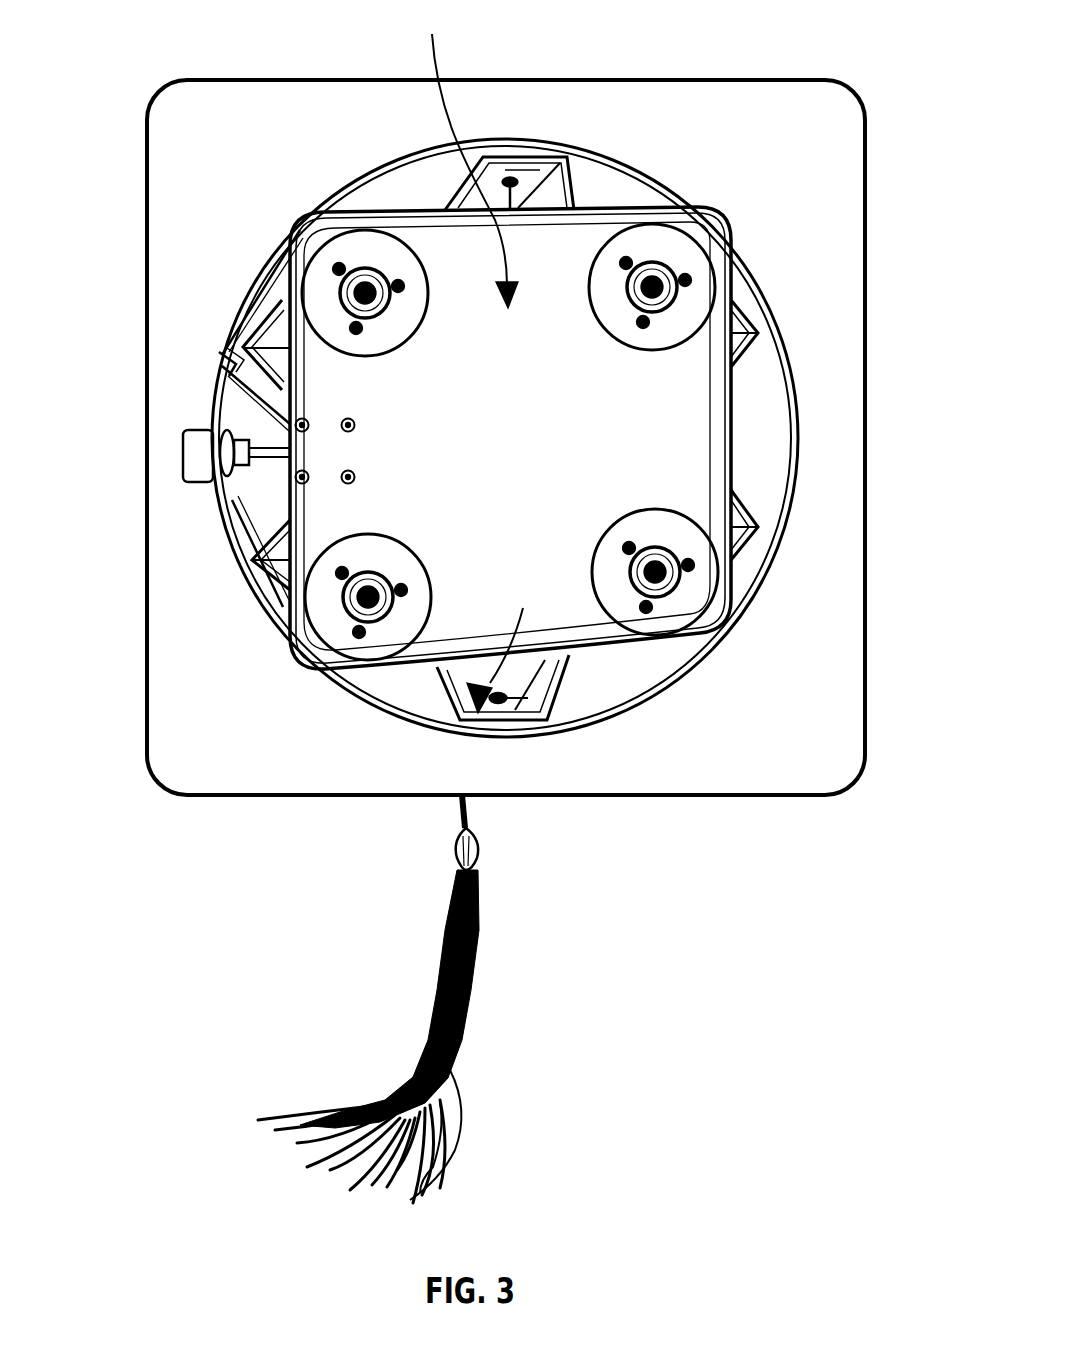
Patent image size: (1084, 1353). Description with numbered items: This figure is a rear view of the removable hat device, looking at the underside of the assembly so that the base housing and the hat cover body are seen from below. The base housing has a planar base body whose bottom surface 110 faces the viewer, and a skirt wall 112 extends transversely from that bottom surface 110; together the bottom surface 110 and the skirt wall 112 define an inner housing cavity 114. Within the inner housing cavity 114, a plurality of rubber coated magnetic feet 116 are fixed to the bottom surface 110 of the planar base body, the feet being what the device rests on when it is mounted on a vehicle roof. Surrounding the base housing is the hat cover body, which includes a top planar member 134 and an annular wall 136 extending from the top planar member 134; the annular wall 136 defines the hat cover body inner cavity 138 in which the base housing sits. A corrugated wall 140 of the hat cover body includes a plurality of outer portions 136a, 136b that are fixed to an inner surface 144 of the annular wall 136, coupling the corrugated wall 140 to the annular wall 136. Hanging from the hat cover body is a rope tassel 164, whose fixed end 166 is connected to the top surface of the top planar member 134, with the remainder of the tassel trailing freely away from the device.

The bottom surface 110 is at (462, 154).
The skirt wall 112 is at (731, 400).
The inner housing cavity 114 is at (657, 435).
The rubber coated magnetic feet 116 is at (612, 548).
The top planar member 134 is at (726, 148).
The annular wall 136 is at (518, 138).
The outer portion 136a is at (275, 596).
The outer portion 136b is at (547, 702).
The hat cover body inner cavity 138 is at (580, 178).
The corrugated wall 140 is at (470, 193).
The inner surface 144 is at (506, 638).
The rope tassel 164 is at (473, 997).
The fixed end 166 is at (418, 1142).